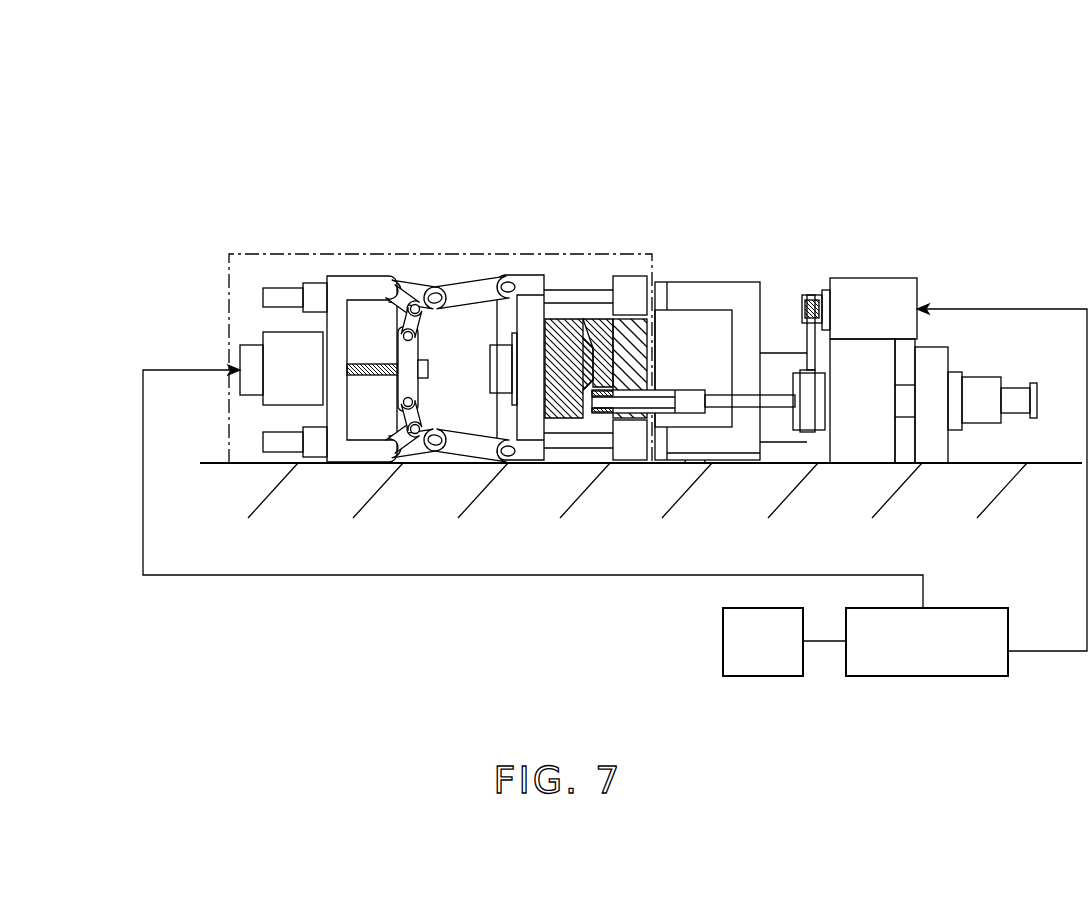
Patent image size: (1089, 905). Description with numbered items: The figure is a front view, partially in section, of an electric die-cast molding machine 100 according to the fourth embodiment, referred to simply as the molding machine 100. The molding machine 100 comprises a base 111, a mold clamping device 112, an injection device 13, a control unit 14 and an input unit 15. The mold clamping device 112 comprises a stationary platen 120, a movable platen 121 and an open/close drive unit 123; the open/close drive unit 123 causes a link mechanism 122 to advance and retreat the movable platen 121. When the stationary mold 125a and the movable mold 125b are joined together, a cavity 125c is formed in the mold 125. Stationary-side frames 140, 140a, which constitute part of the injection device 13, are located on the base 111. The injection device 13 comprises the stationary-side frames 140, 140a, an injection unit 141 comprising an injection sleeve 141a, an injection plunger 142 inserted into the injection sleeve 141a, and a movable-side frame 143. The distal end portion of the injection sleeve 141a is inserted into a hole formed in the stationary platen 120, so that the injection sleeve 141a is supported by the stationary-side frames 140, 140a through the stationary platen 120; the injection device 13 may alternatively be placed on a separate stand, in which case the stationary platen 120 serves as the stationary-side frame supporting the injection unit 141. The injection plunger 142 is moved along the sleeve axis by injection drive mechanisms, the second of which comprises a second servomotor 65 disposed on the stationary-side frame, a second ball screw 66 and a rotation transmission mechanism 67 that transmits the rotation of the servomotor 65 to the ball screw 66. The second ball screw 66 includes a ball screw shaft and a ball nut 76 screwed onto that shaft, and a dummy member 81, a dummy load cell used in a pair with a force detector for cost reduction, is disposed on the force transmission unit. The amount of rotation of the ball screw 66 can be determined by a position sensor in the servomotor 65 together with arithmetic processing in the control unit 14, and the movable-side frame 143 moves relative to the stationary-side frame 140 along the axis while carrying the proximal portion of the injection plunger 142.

The molding machine 100 is at (790, 108).
The injection device 13 is at (968, 255).
The mold clamping device 112 is at (446, 253).
The link mechanism 122 is at (414, 283).
The movable platen 121 is at (526, 283).
The mold 125 is at (625, 280).
The movable mold 125b is at (560, 318).
The stationary mold 125a is at (598, 318).
The cavity 125c is at (612, 357).
The stationary platen 120 is at (631, 285).
The stationary-side frame 140a is at (703, 283).
The injection sleeve 141a is at (650, 393).
The injection unit 141 is at (631, 425).
The injection plunger 142 is at (776, 392).
The rotation transmission mechanism 67 is at (818, 294).
The second servomotor 65 is at (886, 277).
The stationary-side frame 140 is at (850, 458).
The movable-side frame 143 is at (930, 465).
The dummy member 81 is at (962, 390).
The ball nut 76 is at (970, 425).
The second ball screw 66 is at (1020, 388).
The open/close drive unit 123 is at (268, 342).
The base 111 is at (700, 460).
The input unit 15 is at (763, 677).
The control unit 14 is at (928, 677).